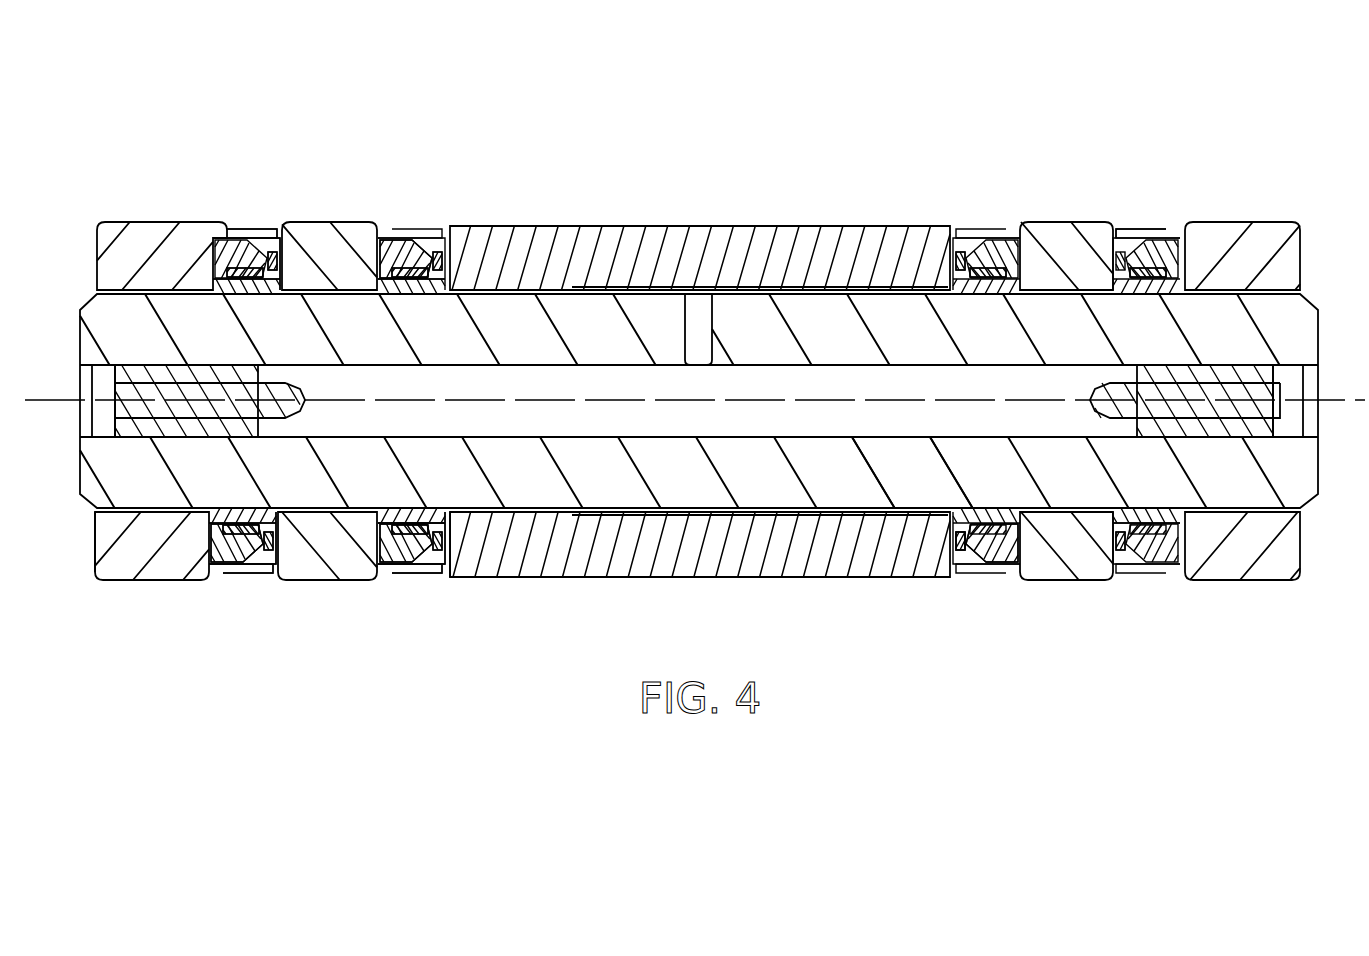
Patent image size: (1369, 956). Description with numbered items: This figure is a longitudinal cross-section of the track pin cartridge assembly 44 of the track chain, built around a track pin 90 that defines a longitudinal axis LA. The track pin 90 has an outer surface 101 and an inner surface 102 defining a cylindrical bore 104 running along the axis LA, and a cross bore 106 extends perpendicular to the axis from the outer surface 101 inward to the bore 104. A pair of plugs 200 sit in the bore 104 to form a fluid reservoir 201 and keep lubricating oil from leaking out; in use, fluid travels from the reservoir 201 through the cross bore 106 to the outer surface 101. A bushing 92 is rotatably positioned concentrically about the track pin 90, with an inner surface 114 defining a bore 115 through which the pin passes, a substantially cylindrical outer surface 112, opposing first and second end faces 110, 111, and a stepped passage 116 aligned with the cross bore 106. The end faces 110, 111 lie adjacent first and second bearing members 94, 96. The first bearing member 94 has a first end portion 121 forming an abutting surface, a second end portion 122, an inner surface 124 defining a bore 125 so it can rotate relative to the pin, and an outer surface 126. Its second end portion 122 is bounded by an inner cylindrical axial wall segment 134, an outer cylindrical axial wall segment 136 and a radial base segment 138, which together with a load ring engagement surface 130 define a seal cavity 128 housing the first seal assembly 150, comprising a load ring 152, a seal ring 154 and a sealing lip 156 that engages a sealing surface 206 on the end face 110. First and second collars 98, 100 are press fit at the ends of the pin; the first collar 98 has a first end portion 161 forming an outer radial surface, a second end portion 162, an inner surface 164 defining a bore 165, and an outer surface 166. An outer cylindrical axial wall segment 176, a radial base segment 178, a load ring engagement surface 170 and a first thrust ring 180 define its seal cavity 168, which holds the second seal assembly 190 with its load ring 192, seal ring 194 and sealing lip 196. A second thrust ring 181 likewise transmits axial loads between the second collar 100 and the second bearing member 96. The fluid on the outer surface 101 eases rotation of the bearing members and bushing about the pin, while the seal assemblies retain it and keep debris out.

The track pin cartridge assembly 44 is at (1035, 142).
The track pin 90 is at (105, 297).
The bushing 92 is at (880, 232).
The first bearing member 94 is at (370, 224).
The second bearing member 96 is at (1040, 232).
The first collar 98 is at (110, 582).
The second collar 100 is at (1230, 583).
The outer surface of the track pin 101 is at (540, 288).
The inner surface of the track pin 102 is at (760, 372).
The bore of the track pin 104 is at (905, 428).
The cross bore 106 is at (700, 300).
The first end face of the bushing 110 is at (452, 226).
The second end face of the bushing 111 is at (962, 256).
The outer surface of the bushing 112 is at (617, 579).
The inner surface of the bushing 114 is at (850, 482).
The bore of the bushing 115 is at (898, 478).
The stepped passage 116 is at (782, 517).
The first end portion of the first bearing member 121 is at (265, 522).
The second end portion of the first bearing member 122 is at (445, 588).
The inner surface of the first bearing member 124 is at (333, 300).
The bore of the first bearing member 125 is at (360, 320).
The outer surface of the first bearing member 126 is at (380, 585).
The seal cavity of the first bearing member 128 is at (405, 268).
The load ring engagement surface 130 is at (430, 294).
The inner cylindrical axial wall segment 134 is at (372, 583).
The outer cylindrical axial wall segment 136 is at (440, 252).
The radial base segment 138 is at (410, 250).
The first seal assembly 150 is at (417, 578).
The load ring 152 is at (398, 578).
The seal ring 154 is at (432, 572).
The sealing lip 156 is at (460, 535).
The first end portion of the first collar 161 is at (93, 546).
The second end portion of the first collar 162 is at (270, 568).
The inner surface of the first collar 164 is at (128, 297).
The bore of the first collar 165 is at (168, 305).
The outer surface of the first collar 166 is at (157, 582).
The seal cavity of the first collar 168 is at (233, 237).
The load ring engagement surface of the first collar 170 is at (262, 232).
The outer cylindrical axial wall segment of the first collar 176 is at (282, 237).
The radial base segment of the first collar 178 is at (225, 291).
The first thrust ring 180 is at (272, 288).
The second thrust ring 181 is at (1150, 508).
The second seal assembly 190 is at (250, 578).
The load ring 192 is at (210, 566).
The seal ring 194 is at (254, 580).
The sealing lip 196 is at (284, 542).
The plugs 200 is at (118, 382).
The fluid reservoir 201 is at (1025, 413).
The sealing surface 206 is at (448, 556).
The longitudinal axis LA is at (68, 415).